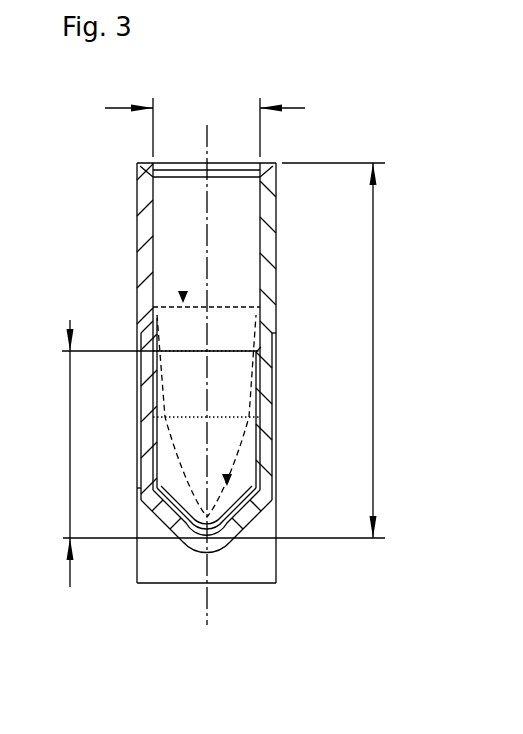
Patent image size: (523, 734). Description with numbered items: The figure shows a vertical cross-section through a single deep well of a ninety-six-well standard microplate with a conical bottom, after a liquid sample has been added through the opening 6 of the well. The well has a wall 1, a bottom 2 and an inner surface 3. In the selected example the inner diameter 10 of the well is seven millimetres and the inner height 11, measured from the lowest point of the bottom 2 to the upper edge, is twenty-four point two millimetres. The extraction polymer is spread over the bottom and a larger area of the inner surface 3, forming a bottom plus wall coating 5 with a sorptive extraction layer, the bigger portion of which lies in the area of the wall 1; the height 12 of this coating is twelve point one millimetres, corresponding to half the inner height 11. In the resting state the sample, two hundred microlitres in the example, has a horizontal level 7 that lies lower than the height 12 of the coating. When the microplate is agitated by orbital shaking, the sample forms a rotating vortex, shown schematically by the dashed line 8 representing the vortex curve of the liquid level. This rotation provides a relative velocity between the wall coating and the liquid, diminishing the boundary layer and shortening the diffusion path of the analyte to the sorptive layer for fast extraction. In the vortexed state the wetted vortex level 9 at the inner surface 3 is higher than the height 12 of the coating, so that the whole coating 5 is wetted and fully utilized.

The wall 1 is at (263, 362).
The bottom 2 is at (242, 520).
The inner surface 3 is at (258, 253).
The bottom plus wall coating 5 is at (248, 428).
The opening 6 is at (187, 178).
The horizontal level 7 is at (176, 432).
The dashed line 8 is at (226, 440).
The wetted vortex level 9 is at (183, 261).
The inner diameter 10 is at (205, 120).
The inner height 11 is at (224, 350).
The height 12 is at (149, 453).